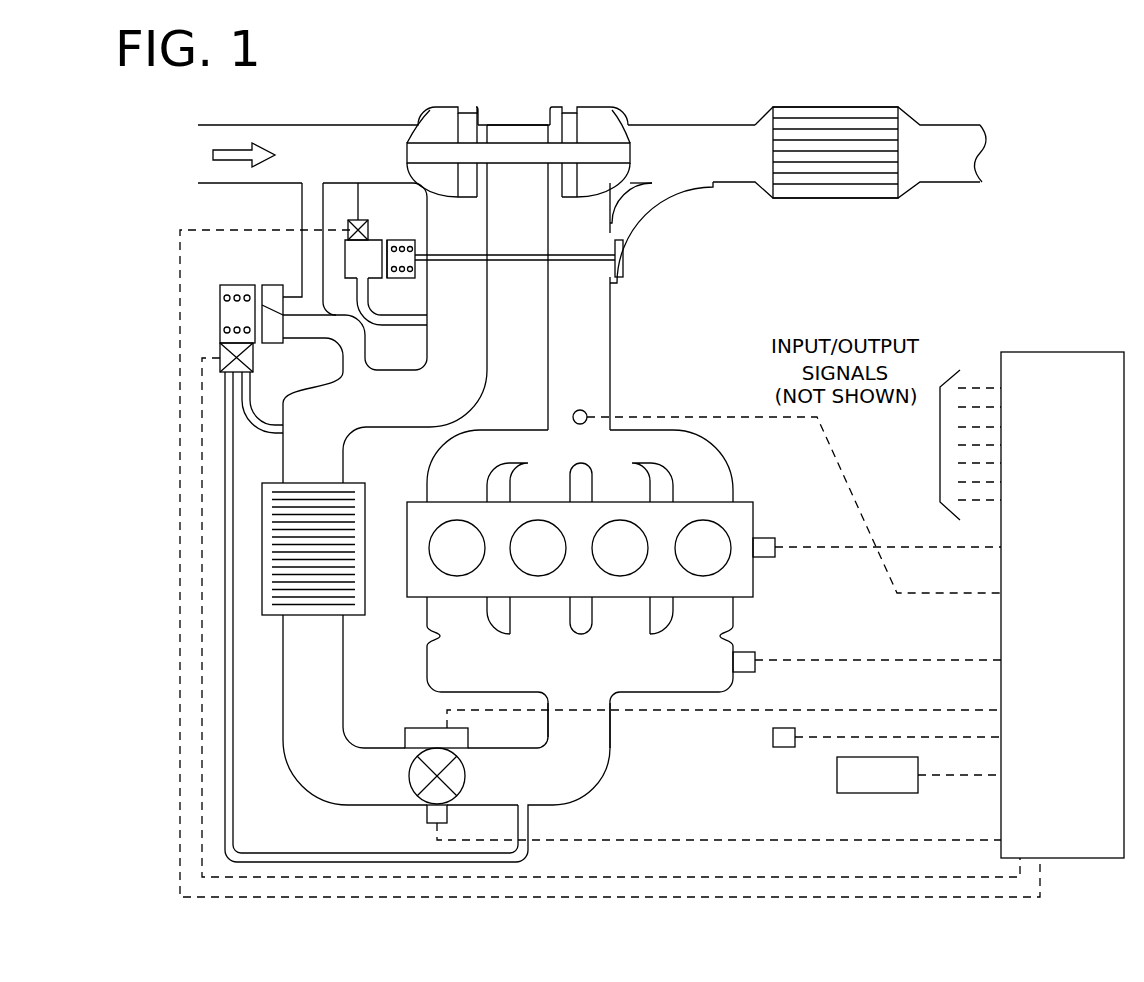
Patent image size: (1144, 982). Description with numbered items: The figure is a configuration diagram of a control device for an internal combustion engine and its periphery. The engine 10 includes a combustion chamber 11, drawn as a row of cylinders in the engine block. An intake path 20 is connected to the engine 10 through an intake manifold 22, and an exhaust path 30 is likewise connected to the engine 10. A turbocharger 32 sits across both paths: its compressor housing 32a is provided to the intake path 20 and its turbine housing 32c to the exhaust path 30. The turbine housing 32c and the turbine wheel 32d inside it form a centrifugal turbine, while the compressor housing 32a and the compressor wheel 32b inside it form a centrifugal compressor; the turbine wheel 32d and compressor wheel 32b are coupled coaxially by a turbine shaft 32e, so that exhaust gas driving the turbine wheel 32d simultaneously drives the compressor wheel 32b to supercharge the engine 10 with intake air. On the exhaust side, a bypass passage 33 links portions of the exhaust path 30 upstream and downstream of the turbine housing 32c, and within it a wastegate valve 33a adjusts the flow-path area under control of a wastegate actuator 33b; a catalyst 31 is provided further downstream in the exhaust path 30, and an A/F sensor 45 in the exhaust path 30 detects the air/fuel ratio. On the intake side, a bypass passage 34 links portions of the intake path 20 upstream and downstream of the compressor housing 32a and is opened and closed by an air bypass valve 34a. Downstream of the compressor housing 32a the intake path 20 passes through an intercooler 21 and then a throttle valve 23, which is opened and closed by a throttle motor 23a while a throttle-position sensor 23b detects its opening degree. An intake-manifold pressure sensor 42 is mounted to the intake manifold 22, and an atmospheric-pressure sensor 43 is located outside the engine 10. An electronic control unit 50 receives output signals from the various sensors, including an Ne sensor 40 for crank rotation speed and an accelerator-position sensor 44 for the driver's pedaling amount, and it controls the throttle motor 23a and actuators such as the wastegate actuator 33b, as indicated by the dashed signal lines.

The internal combustion engine 10 is at (773, 590).
The combustion chamber 11 is at (732, 533).
The intake path 20 is at (368, 125).
The intercooler 21 is at (270, 617).
The intake manifold 22 is at (427, 660).
The throttle valve 23 is at (410, 772).
The throttle motor 23a is at (417, 728).
The throttle-position sensor 23b is at (427, 812).
The exhaust path 30 is at (647, 123).
The catalyst 31 is at (833, 107).
The turbocharger 32 is at (502, 125).
The compressor housing 32a is at (443, 107).
The compressor wheel 32b is at (428, 133).
The turbine housing 32c is at (592, 143).
The turbine wheel 32d is at (607, 112).
The turbine shaft 32e is at (522, 140).
The bypass passage 33 is at (697, 210).
The wastegate valve 33a is at (623, 272).
The wastegate actuator 33b is at (387, 240).
The bypass passage 34 is at (302, 205).
The air bypass valve 34a is at (235, 285).
The Ne sensor 40 is at (777, 553).
The intake-manifold pressure sensor 42 is at (755, 668).
The atmospheric-pressure sensor 43 is at (773, 737).
The accelerator-position sensor 44 is at (837, 775).
The A/F sensor 45 is at (590, 413).
The electronic control unit 50 is at (1060, 352).